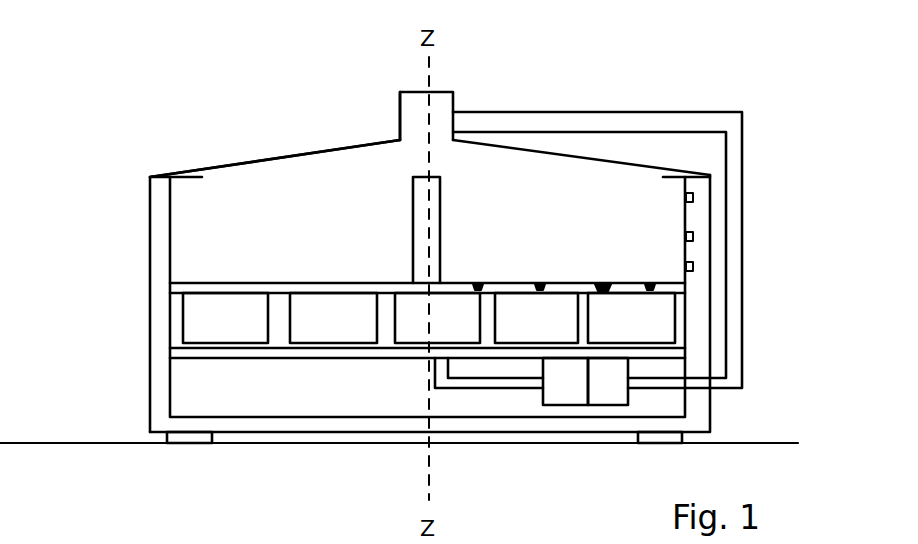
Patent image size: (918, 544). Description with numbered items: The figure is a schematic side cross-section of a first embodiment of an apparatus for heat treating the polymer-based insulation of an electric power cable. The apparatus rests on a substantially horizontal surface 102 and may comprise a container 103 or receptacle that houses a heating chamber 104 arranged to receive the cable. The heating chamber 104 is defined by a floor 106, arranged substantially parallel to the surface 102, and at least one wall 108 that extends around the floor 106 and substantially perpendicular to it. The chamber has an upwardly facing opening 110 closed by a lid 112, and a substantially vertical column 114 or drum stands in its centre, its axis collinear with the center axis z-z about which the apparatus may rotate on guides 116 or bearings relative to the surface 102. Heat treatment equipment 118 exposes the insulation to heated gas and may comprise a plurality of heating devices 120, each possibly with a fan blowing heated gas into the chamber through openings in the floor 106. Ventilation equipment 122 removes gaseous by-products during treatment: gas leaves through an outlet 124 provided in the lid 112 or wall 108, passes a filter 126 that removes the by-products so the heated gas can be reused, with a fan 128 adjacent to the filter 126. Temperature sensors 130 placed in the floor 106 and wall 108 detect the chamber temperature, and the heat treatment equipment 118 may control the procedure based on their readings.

The horizontal surface 102 is at (83, 440).
The container 103 is at (150, 222).
The heating chamber 104 is at (255, 227).
The floor 106 is at (300, 283).
The wall 108 is at (174, 234).
The opening 110 is at (370, 172).
The lid 112 is at (313, 148).
The vertical column 114 is at (441, 207).
The guides 116 is at (190, 440).
The heat treatment equipment 118 is at (178, 315).
The heating devices 120 is at (332, 338).
The ventilation equipment 122 is at (742, 297).
The outlet 124 is at (438, 115).
The filter 126 is at (600, 398).
The fan 128 is at (548, 398).
The temperature sensors 130 is at (700, 262).